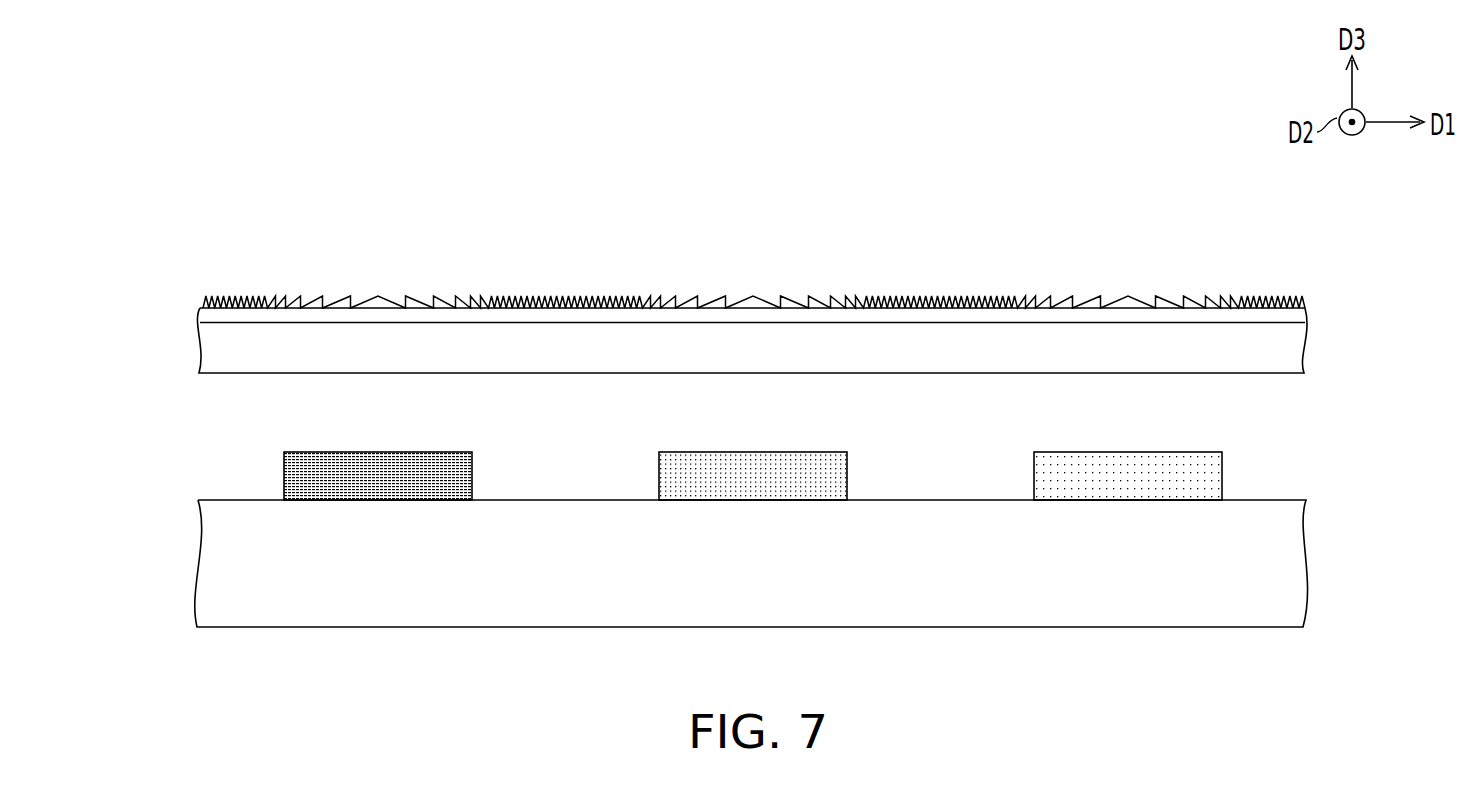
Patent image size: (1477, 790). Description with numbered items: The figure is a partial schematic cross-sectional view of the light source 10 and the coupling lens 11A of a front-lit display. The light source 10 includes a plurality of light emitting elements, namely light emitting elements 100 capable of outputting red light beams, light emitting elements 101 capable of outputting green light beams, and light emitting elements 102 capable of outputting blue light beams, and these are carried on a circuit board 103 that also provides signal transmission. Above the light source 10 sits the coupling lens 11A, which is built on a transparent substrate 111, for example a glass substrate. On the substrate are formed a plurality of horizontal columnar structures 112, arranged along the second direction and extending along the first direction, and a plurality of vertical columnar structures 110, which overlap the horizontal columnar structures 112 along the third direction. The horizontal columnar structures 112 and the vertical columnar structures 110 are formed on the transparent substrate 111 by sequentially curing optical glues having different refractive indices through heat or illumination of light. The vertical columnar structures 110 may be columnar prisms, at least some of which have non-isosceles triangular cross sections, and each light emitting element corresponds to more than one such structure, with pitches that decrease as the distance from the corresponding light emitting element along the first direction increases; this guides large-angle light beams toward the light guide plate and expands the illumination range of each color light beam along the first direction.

The light source 10 is at (131, 452).
The light emitting elements 100 is at (292, 479).
The light emitting elements 101 is at (670, 479).
The light emitting elements 102 is at (1045, 479).
The circuit board 103 is at (215, 567).
The coupling lens 11A is at (133, 297).
The vertical columnar structures 110 is at (1306, 302).
The transparent substrate 111 is at (215, 345).
The horizontal columnar structures 112 is at (1280, 313).